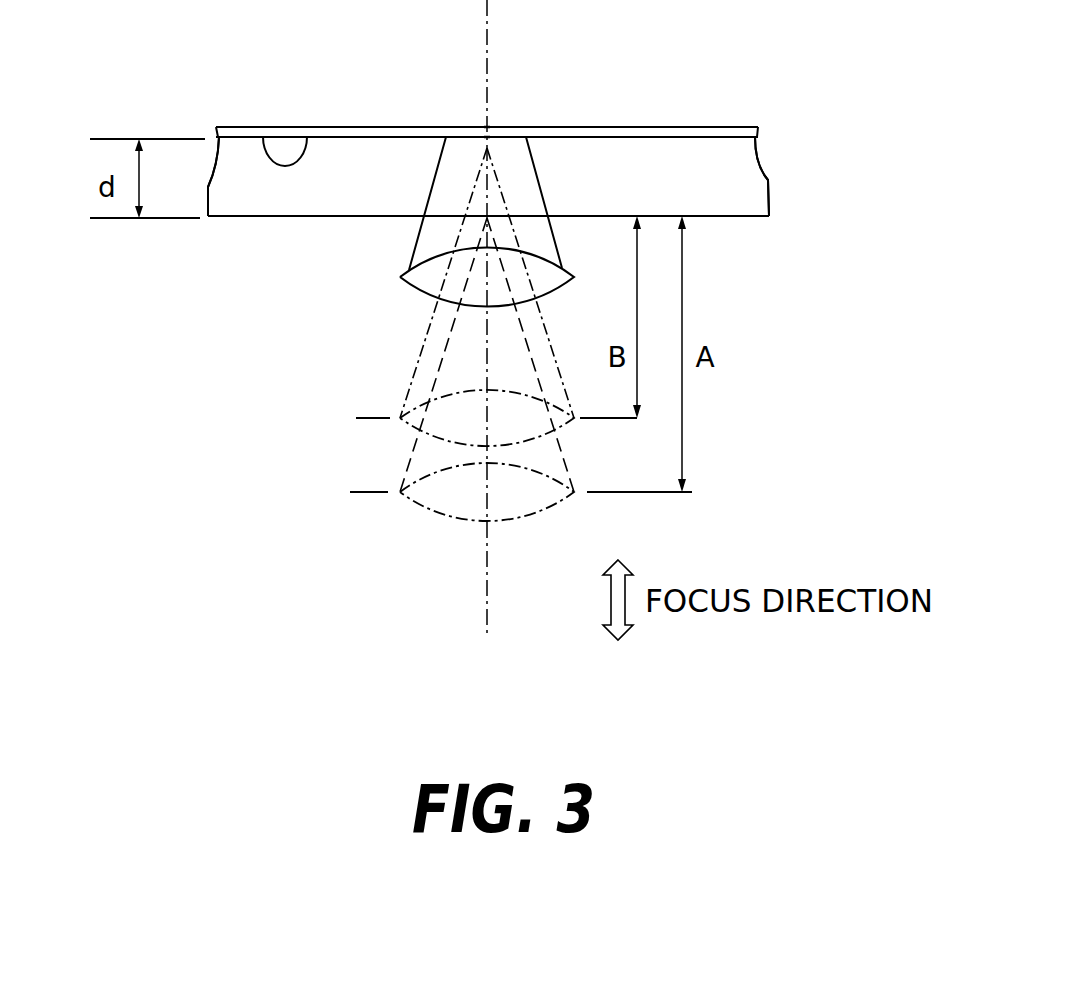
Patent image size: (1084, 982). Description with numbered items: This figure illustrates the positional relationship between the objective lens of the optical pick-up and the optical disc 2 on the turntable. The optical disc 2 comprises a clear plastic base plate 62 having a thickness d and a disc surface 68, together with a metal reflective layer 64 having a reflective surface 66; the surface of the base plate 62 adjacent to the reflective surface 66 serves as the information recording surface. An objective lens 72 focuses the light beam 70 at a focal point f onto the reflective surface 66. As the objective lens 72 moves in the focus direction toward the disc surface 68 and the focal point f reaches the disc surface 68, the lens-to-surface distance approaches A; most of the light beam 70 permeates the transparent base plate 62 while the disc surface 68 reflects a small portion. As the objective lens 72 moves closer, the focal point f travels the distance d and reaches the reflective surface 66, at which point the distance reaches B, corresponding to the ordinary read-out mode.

The optical disc 2 is at (778, 148).
The clear plastic base plate 62 is at (712, 197).
The metal reflective layer 64 is at (630, 127).
The reflective surface 66 is at (307, 140).
The disc surface 68 is at (233, 217).
The focal point f is at (487, 127).
The light beam 70 is at (420, 233).
The objective lens 72 is at (432, 287).